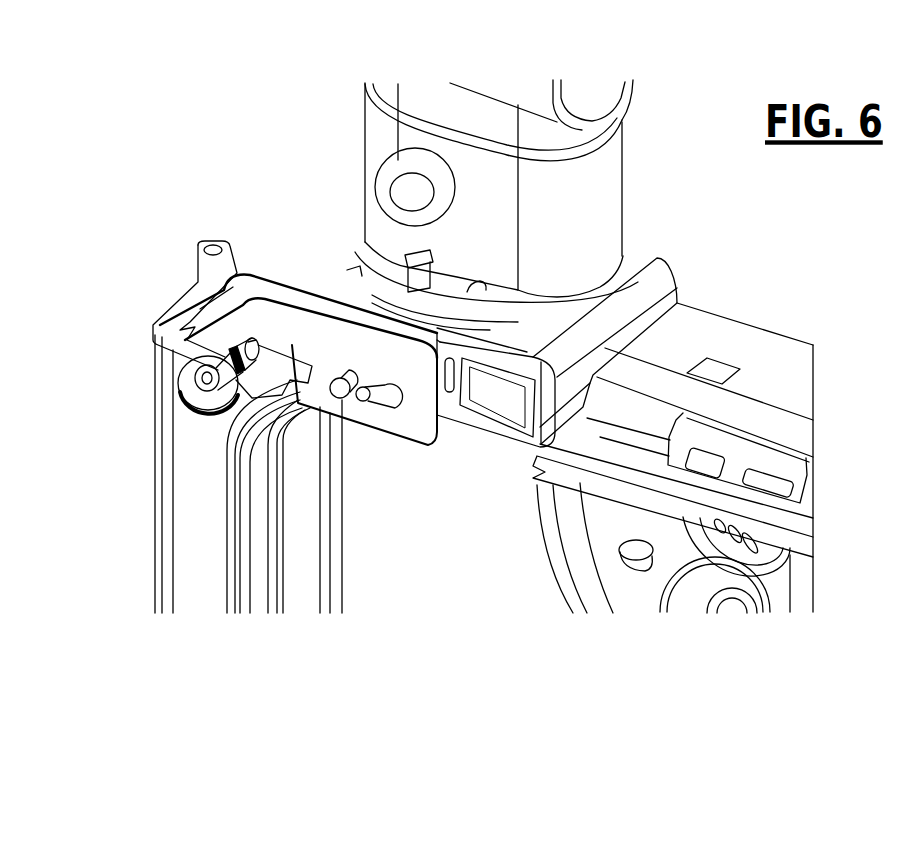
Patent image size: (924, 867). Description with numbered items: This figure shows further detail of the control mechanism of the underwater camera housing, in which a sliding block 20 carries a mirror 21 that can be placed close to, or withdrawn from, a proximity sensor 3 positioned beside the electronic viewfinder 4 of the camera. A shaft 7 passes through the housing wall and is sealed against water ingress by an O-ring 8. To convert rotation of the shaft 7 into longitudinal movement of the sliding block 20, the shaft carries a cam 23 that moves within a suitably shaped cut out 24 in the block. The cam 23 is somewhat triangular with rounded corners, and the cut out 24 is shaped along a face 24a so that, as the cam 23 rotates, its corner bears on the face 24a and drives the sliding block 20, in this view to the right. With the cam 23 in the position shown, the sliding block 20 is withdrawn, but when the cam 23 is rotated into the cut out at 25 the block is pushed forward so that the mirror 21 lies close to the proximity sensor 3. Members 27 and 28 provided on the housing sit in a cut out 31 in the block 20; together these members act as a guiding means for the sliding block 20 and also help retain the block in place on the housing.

The proximity sensor 3 is at (458, 461).
The electronic viewfinder 4 is at (502, 464).
The shaft 7 is at (251, 232).
The O-ring 8 is at (148, 280).
The sliding block 20 is at (306, 154).
The mirror 21 is at (554, 285).
The cam 23 is at (197, 194).
The cut out 24 is at (298, 302).
The face 24a is at (387, 206).
The cut out position 25 is at (465, 217).
The member 27 is at (592, 435).
The member 28 is at (353, 464).
The cut out 31 is at (397, 491).